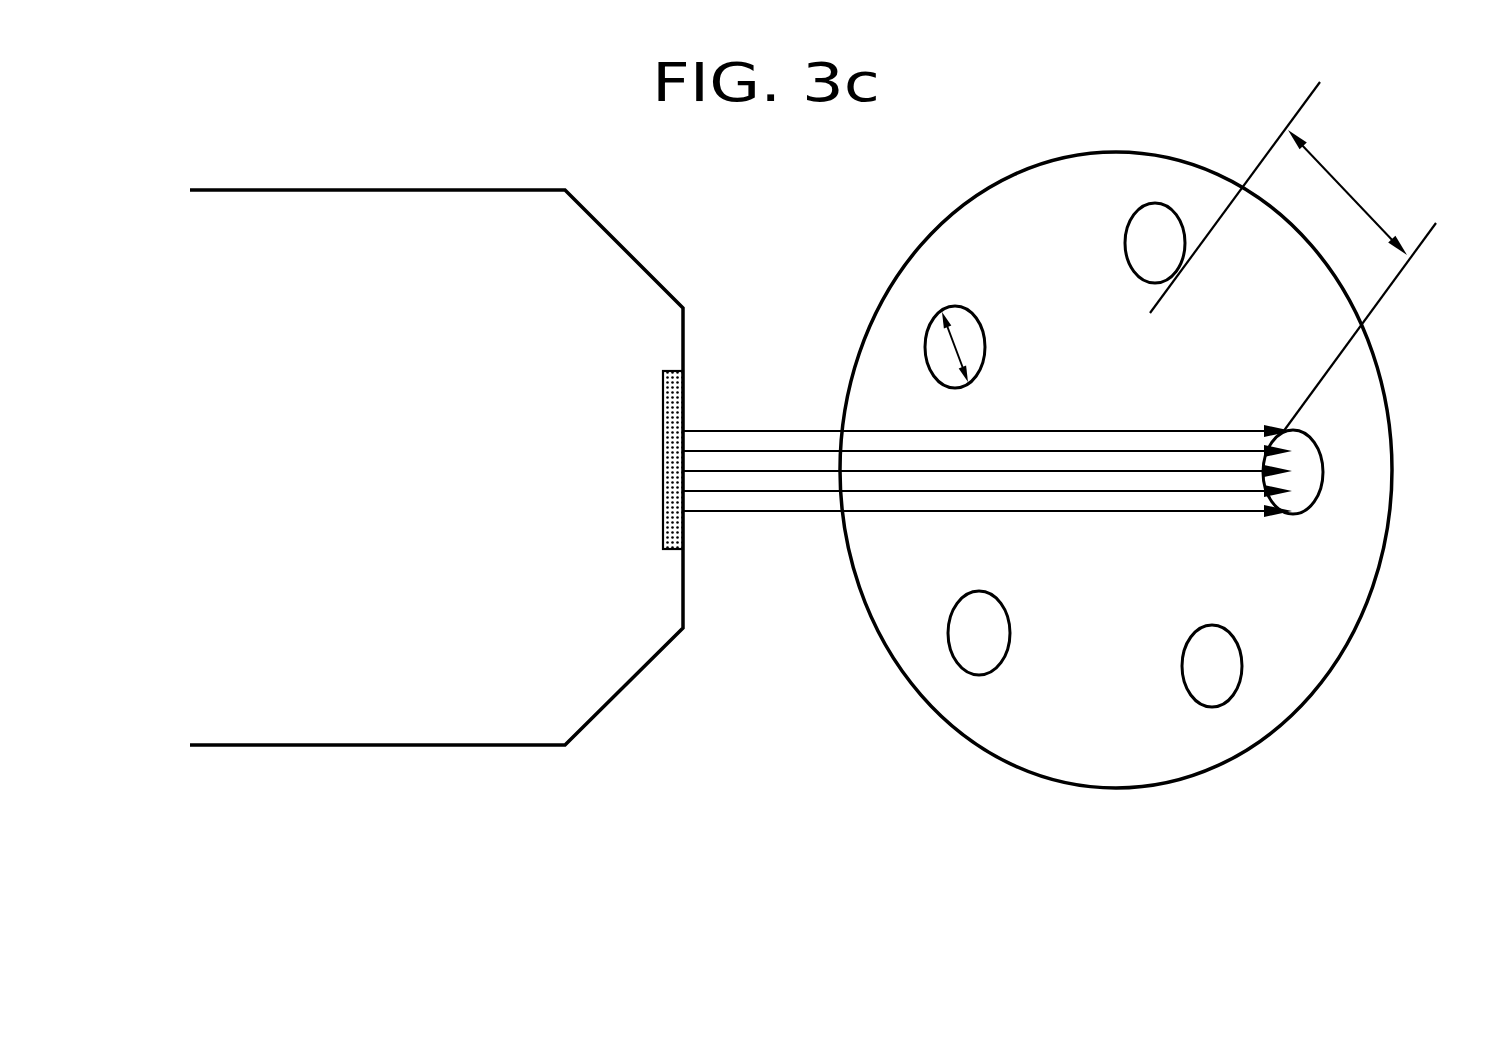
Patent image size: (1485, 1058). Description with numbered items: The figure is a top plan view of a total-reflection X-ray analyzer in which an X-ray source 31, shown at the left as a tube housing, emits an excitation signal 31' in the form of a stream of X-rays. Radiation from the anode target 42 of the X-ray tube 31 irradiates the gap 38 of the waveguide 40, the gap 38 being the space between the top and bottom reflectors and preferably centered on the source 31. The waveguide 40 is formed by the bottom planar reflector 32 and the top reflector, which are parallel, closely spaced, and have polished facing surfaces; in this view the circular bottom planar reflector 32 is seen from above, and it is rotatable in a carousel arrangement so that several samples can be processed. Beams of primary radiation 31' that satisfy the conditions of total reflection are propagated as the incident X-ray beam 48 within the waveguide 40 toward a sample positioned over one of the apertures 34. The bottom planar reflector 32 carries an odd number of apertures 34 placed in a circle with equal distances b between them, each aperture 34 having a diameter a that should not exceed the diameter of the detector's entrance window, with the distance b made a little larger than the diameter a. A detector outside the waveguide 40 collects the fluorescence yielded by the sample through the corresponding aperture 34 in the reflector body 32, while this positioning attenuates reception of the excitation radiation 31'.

The X-ray source 31 is at (436, 516).
The excitation signal 31' is at (787, 334).
The bottom planar reflector 32 is at (1355, 637).
The aperture 34 is at (1305, 472).
The gap 38 is at (829, 583).
The waveguide 40 is at (922, 759).
The anode target 42 is at (689, 551).
The incident X-ray beam 48 is at (1053, 517).
The aperture diameter a is at (955, 350).
The distance between holes b is at (1345, 190).